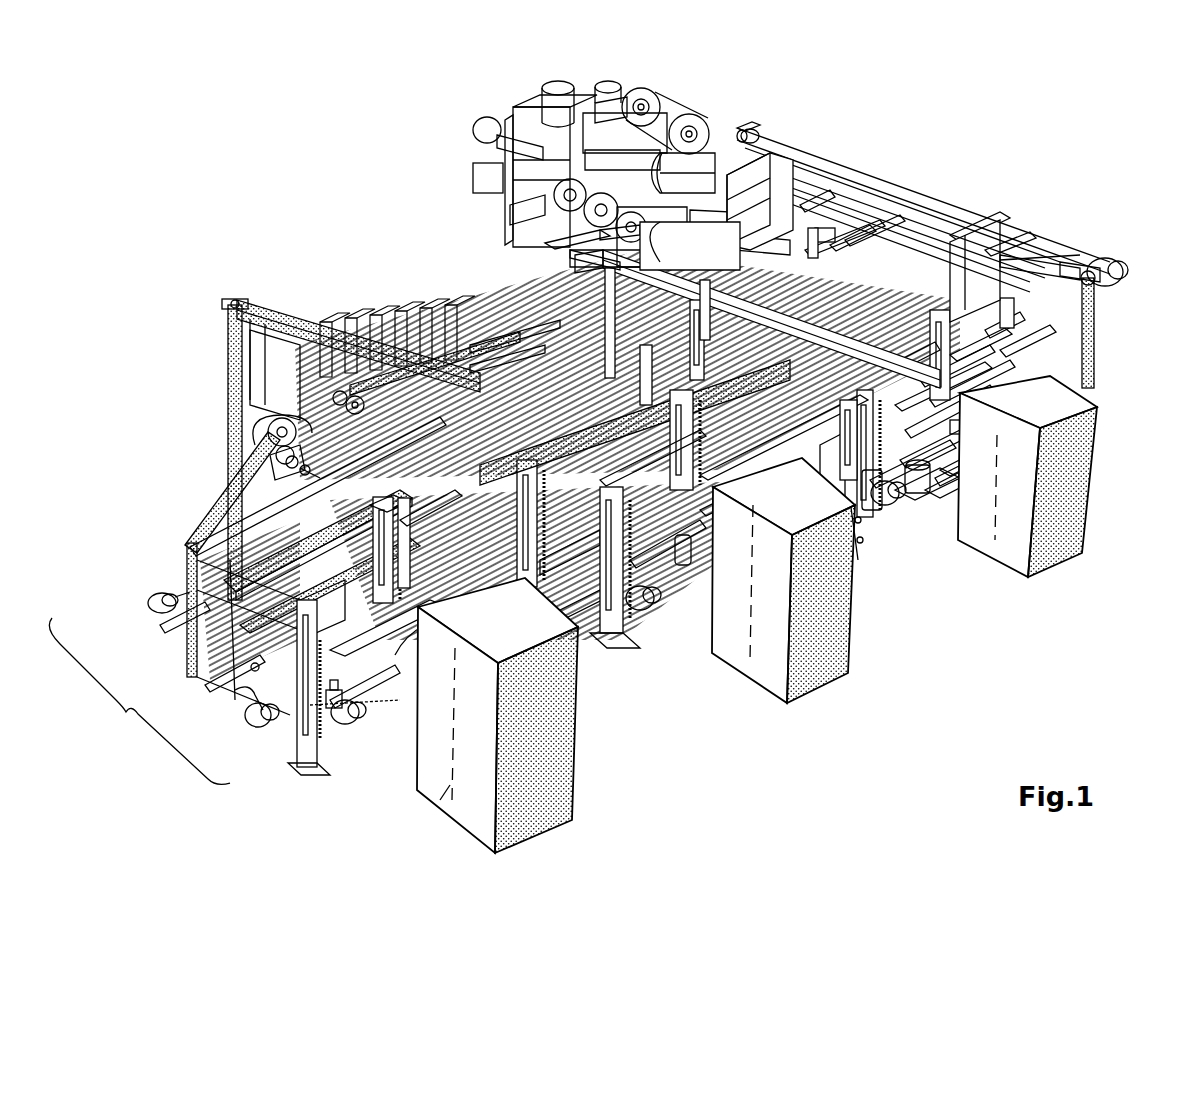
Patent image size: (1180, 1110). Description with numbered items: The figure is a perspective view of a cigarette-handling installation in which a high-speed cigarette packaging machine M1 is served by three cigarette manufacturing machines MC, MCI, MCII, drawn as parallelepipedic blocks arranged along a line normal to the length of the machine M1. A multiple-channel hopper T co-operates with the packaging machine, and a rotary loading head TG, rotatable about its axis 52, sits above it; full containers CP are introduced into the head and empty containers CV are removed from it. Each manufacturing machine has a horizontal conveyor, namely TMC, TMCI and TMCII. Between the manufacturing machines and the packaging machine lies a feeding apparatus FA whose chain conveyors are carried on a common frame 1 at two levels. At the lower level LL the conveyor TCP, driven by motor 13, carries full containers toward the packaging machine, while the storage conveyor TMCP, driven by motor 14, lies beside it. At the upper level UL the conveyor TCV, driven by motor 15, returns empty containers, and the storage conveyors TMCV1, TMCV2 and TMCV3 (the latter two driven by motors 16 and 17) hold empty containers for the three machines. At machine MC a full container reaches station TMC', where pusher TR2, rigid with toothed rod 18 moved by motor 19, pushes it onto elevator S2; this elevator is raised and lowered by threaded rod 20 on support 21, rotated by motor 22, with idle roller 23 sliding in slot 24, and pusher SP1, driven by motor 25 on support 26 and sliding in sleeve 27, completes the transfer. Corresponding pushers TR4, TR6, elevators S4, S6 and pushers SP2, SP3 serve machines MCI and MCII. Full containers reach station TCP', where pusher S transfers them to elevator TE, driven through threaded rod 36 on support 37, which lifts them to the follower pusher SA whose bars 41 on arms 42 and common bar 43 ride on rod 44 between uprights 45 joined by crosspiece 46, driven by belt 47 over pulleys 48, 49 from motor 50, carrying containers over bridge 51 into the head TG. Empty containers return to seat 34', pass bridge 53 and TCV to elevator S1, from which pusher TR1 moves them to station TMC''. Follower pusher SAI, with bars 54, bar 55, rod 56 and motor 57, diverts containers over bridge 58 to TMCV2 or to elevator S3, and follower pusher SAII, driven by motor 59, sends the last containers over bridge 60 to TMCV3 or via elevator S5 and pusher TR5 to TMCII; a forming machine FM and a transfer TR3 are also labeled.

The frame 1 is at (216, 520).
The motor 13 is at (262, 722).
The motor 14 is at (154, 602).
The motor 15 is at (305, 476).
The motor 16 is at (355, 397).
The motor 17 is at (287, 462).
The toothed rod 18 is at (1005, 448).
The motor 19 is at (983, 449).
The vertical threaded rod 20 is at (917, 480).
The support 21 is at (881, 510).
The motor 22 is at (883, 518).
The idle roller 23 is at (846, 444).
The vertical slot 24 is at (855, 440).
The motor 25 is at (941, 500).
The support 26 is at (938, 475).
The sleeve 27 is at (971, 472).
The second seat 34' is at (875, 192).
The vertical threaded rod 36 is at (828, 256).
The support 37 is at (832, 234).
The vertical bars 41 is at (995, 292).
The horizontal arms 42 is at (963, 237).
The common bar 43 is at (1013, 257).
The rod 44 is at (940, 222).
The vertical uprights 45 is at (770, 138).
The crosspiece 46 is at (1040, 264).
The drive belt 47 is at (1070, 270).
The pulley 48 is at (1086, 288).
The pulley 49 is at (745, 132).
The motor 50 is at (1115, 274).
The fixed bridge 51 is at (815, 228).
The axis 52 is at (740, 165).
The fixed connecting bridge 53 is at (910, 241).
The vertical bars 54 is at (695, 311).
The common bar 55 is at (680, 323).
The rod 56 is at (606, 282).
The motor 57 is at (840, 400).
The fixed connection bridge 58 is at (630, 360).
The motor 59 is at (532, 556).
The connection bridge 60 is at (340, 440).
The full containers CP is at (750, 208).
The empty containers CV is at (1014, 310).
The feeding apparatus FA is at (139, 701).
The forming machine FM is at (445, 797).
The lower level LL is at (167, 582).
The upper level UL is at (233, 404).
The cigarette packaging machine M1 is at (570, 240).
The cigarette manufacturing machine MC is at (1045, 562).
The cigarette manufacturing machine MCI is at (820, 693).
The cigarette manufacturing machine MCII is at (540, 835).
The pusher S is at (1021, 355).
The elevator S1 is at (1005, 325).
The elevator S2 is at (860, 390).
The elevator S3 is at (748, 490).
The elevator S4 is at (640, 560).
The elevator S5 is at (415, 548).
The elevator S6 is at (355, 690).
The follower pusher SA is at (1000, 248).
The follower pusher SAI is at (607, 300).
The follower pusher SAII is at (300, 343).
The second horizontal pusher SP1 is at (915, 481).
The second pusher SP2 is at (635, 608).
The second pusher SP3 is at (347, 698).
The multiple-channel hopper T is at (740, 232).
The conveyor TCP is at (212, 678).
The station TCP' is at (957, 366).
The conveyor TCV is at (365, 483).
The elevator TE is at (858, 212).
The rotary loading head TG is at (735, 148).
The conveyor TMC is at (933, 482).
The station TMC' is at (963, 411).
The station TMC'' is at (996, 383).
The conveyor TMCI is at (634, 615).
The conveyor TMCII is at (393, 710).
The conveyor TMCP is at (210, 600).
The conveyor TMCV1 is at (785, 285).
The conveyor TMCV2 is at (530, 312).
The conveyor TMCV3 is at (530, 344).
The transfer means TR1 is at (980, 346).
The first horizontal pushing means TR2 is at (965, 390).
The transfer TR3 is at (728, 457).
The first horizontal pusher TR4 is at (646, 490).
The pusher TR5 is at (400, 544).
The first pusher TR6 is at (400, 640).